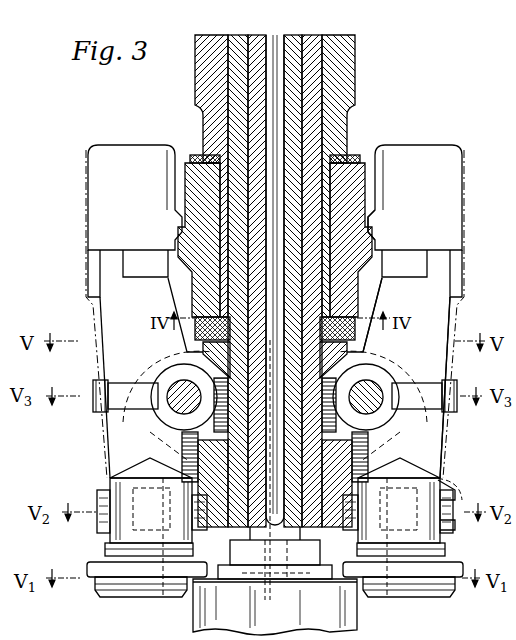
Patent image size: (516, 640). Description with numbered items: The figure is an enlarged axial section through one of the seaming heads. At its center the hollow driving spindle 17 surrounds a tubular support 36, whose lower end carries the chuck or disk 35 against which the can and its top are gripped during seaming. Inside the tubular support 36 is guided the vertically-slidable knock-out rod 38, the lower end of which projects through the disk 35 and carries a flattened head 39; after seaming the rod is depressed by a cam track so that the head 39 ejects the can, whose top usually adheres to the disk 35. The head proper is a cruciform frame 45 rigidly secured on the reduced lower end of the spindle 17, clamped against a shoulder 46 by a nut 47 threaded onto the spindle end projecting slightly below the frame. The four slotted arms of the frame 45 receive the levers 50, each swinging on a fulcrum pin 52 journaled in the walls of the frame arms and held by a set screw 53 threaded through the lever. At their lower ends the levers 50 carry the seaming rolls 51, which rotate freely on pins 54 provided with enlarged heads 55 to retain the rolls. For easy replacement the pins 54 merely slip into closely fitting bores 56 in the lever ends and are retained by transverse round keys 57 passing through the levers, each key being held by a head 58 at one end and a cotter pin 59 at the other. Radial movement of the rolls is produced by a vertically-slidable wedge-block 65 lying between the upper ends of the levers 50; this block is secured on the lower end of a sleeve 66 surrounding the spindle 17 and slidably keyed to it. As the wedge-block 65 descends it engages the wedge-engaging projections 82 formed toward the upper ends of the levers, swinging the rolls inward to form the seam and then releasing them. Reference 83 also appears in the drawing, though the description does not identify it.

The seaming head spindle 17 is at (316, 37).
The chuck or disk 35 is at (323, 577).
The tubular support 36 is at (308, 30).
The knock-out rod 38 is at (268, 36).
The flattened head 39 is at (280, 593).
The cruciform frame 45 is at (399, 362).
The shoulder 46 is at (205, 320).
The nut 47 is at (224, 537).
The levers 50 is at (406, 378).
The seaming rolls 51 is at (455, 563).
The fulcrum pin 52 is at (372, 412).
The set screws 53 is at (457, 400).
The pins 54 is at (440, 596).
The enlarged heads 55 is at (393, 592).
The bores 56 is at (438, 479).
The transverse round keys 57 is at (456, 500).
The heads 58 is at (448, 526).
The cotter pins 59 is at (352, 510).
The wedge-block 65 is at (355, 163).
The sleeve 66 is at (338, 70).
The wedge-engaging projections 82 is at (181, 224).
The notch 83 is at (369, 244).